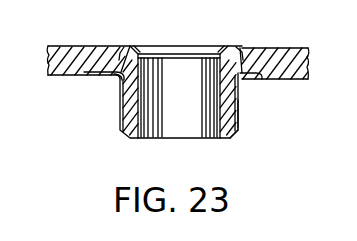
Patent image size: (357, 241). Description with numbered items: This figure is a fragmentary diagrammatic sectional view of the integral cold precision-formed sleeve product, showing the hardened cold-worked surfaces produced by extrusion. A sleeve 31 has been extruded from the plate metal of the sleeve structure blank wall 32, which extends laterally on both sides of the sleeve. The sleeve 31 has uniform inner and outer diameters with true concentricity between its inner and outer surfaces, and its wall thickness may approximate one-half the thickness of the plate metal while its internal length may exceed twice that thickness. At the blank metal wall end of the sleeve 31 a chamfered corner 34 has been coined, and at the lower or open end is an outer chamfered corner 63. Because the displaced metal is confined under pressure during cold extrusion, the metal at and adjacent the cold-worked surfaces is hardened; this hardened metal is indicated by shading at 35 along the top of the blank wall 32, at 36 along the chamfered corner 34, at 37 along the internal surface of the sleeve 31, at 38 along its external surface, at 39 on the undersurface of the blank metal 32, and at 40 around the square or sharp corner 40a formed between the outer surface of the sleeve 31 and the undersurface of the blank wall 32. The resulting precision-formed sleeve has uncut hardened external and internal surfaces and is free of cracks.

The sleeve 31 is at (132, 112).
The sleeve structure blank wall 32 is at (68, 61).
The chamfered corner 34 is at (227, 50).
The hardened metal at top of blank wall 35 is at (253, 50).
The hardened metal along chamfered corner 36 is at (137, 50).
The hardened metal along internal sleeve surface 37 is at (228, 97).
The hardened metal along external sleeve surface 38 is at (240, 102).
The hardened metal on undersurface of blank metal 39 is at (263, 82).
The hardened metal around sharp corner 40 is at (120, 77).
The square or sharp corner 40a is at (122, 80).
The outer chamfered corner 63 is at (240, 137).